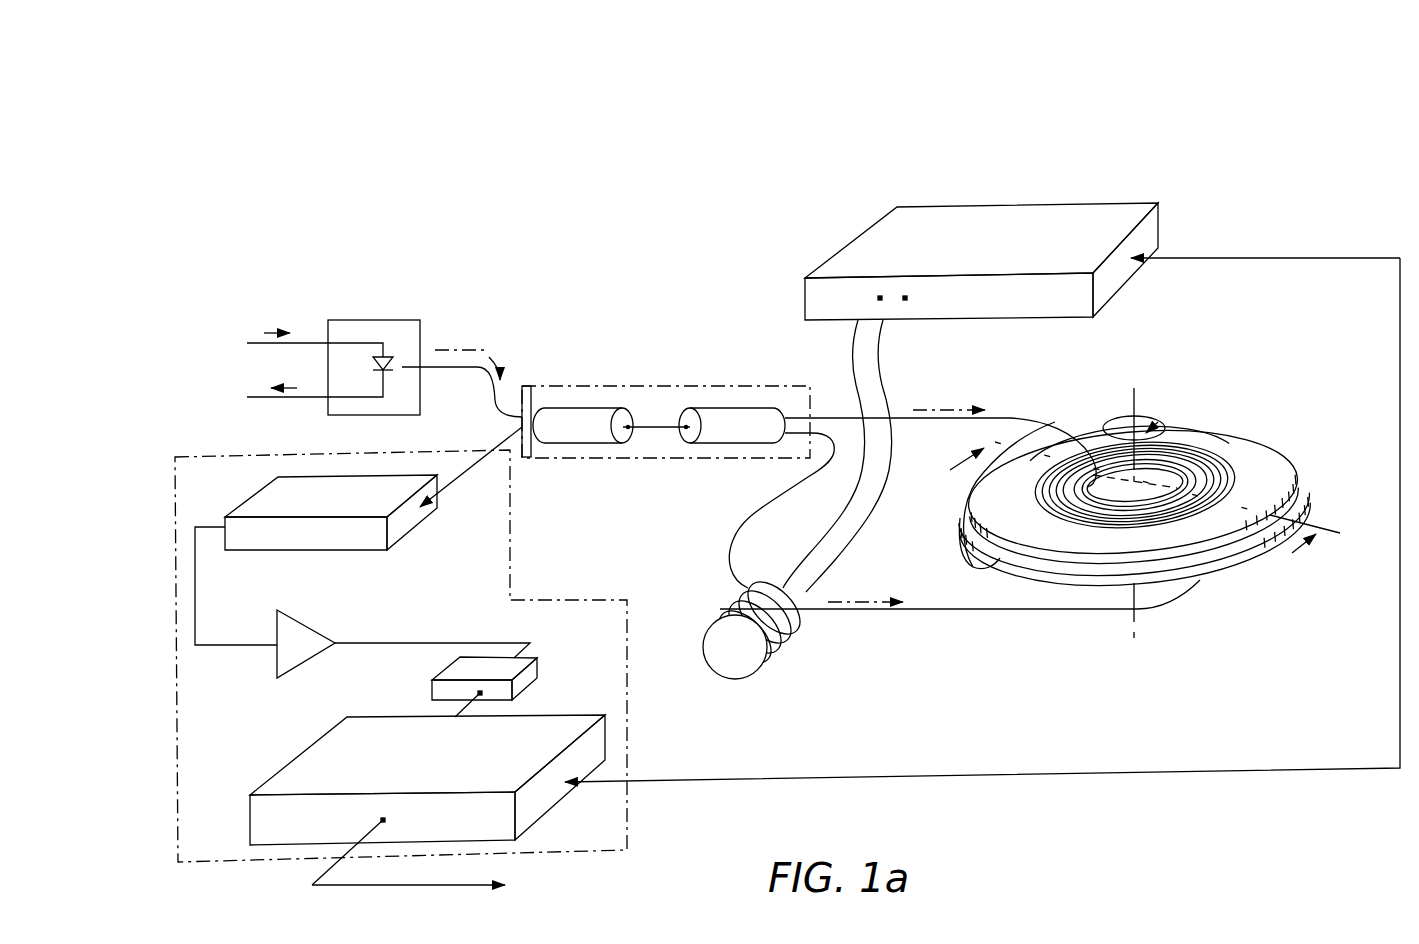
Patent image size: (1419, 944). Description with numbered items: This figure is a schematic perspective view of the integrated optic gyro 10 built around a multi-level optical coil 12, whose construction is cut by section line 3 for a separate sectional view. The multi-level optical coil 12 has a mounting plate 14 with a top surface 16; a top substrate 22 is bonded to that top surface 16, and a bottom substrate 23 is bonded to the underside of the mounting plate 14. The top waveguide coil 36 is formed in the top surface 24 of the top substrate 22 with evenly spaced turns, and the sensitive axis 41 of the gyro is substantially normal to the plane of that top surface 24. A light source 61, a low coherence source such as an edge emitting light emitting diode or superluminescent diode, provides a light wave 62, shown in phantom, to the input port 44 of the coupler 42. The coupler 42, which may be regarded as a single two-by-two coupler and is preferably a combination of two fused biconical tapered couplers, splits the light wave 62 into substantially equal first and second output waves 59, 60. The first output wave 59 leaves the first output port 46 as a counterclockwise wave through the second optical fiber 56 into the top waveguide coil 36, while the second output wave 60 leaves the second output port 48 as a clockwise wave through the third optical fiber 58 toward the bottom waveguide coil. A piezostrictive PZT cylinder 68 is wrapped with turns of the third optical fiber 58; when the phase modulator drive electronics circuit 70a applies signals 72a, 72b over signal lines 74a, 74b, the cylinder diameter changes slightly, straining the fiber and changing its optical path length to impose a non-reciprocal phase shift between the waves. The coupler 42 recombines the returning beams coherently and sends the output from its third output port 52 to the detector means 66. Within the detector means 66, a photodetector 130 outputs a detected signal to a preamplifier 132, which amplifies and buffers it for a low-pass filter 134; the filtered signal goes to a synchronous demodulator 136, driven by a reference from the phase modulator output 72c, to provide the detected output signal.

The integrated optic gyro 10 is at (1212, 122).
The multi-level optical coil 12 is at (1258, 410).
The mounting plate 14 is at (1308, 493).
The top surface of the mounting plate 16 is at (968, 518).
The top substrate 22 is at (1283, 462).
The bottom substrate 23 is at (1230, 570).
The top surface of the top substrate 24 is at (1258, 458).
The top waveguide coil 36 is at (1197, 448).
The sensitive axis of the gyro 41 is at (1134, 403).
The coupler 42 is at (622, 385).
The input port 44 is at (535, 406).
The first output port 46 is at (810, 418).
The second output port 48 is at (787, 482).
The third output port 52 is at (528, 458).
The second optical fiber 56 is at (1010, 418).
The third optical fiber 58 is at (728, 547).
The first output wave 59 is at (962, 410).
The second output wave 60 is at (883, 602).
The light source 61 is at (366, 320).
The light wave 62 is at (462, 350).
The detector means 66 is at (630, 808).
The PZT cylinder 68 is at (732, 667).
The phase modulator drive electronics circuit 70a is at (1020, 202).
The drive signal 72a is at (880, 297).
The drive signal 72b is at (905, 297).
The phase modulator output 72c is at (1120, 258).
The signal line 74a is at (852, 346).
The signal line 74b is at (878, 334).
The photodetector 130 is at (400, 549).
The preamplifier 132 is at (305, 659).
The low-pass filter 134 is at (525, 681).
The synchronous demodulator 136 is at (532, 807).
The section line 3 is at (1135, 510).